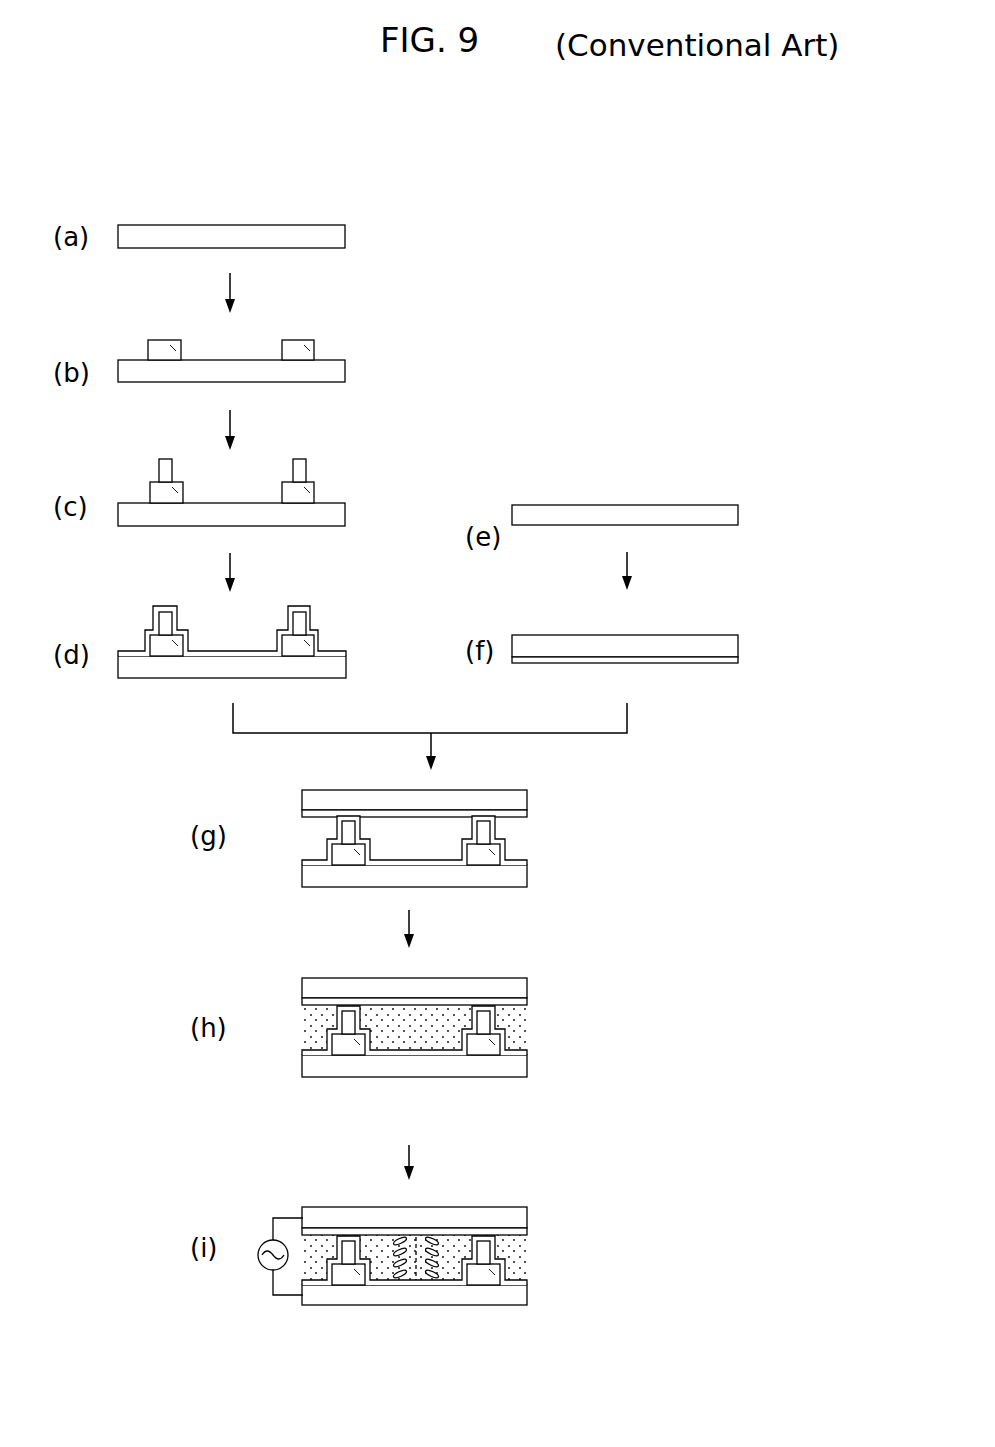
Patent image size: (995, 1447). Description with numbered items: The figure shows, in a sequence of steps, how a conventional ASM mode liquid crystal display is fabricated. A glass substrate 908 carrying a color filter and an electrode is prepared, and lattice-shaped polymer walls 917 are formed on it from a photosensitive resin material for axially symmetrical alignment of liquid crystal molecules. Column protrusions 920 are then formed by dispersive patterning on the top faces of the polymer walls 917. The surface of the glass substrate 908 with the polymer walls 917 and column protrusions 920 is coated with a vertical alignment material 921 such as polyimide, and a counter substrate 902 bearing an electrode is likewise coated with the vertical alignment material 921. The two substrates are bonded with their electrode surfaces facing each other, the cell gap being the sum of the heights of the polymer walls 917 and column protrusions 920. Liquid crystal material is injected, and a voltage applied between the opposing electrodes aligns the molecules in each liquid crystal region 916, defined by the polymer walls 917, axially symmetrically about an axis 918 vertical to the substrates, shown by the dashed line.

The glass substrate 908 is at (560, 1296).
The polymer walls 917 is at (471, 1325).
The column protrusions 920 is at (483, 1236).
The vertical alignment material 921 is at (562, 1255).
The counter substrate 902 is at (560, 1190).
The liquid crystal region 916 is at (413, 1050).
The axis 918 is at (412, 1280).